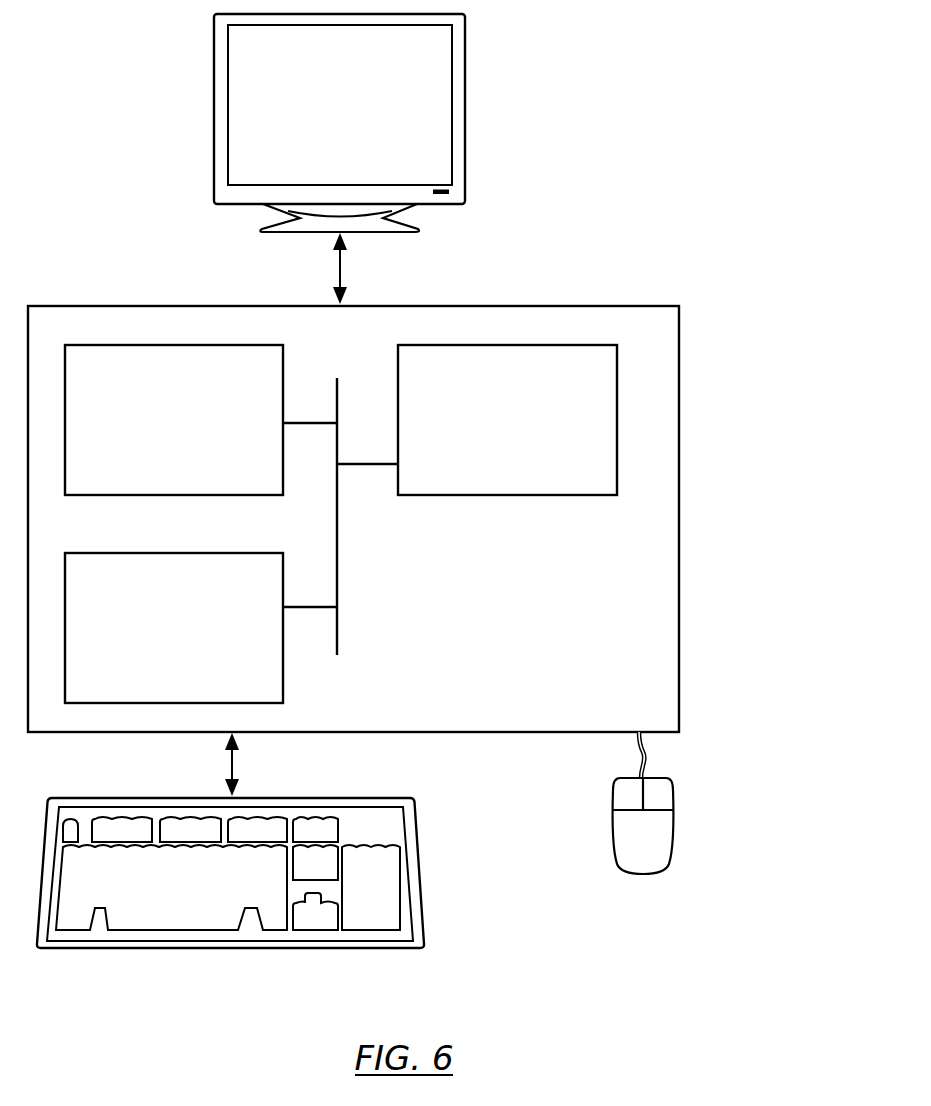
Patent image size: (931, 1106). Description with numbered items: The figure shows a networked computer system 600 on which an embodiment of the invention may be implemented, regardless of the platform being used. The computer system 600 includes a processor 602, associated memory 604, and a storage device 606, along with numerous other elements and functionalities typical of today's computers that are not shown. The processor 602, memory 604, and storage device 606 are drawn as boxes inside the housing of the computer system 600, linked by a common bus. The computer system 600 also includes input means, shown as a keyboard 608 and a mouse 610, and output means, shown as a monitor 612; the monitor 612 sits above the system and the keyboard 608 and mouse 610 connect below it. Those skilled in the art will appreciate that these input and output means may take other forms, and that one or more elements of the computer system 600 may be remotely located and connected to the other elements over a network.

The networked computer system 600 is at (727, 319).
The processor 602 is at (486, 420).
The memory 604 is at (153, 422).
The storage device 606 is at (153, 626).
The keyboard 608 is at (151, 886).
The mouse 610 is at (673, 878).
The monitor 612 is at (319, 118).